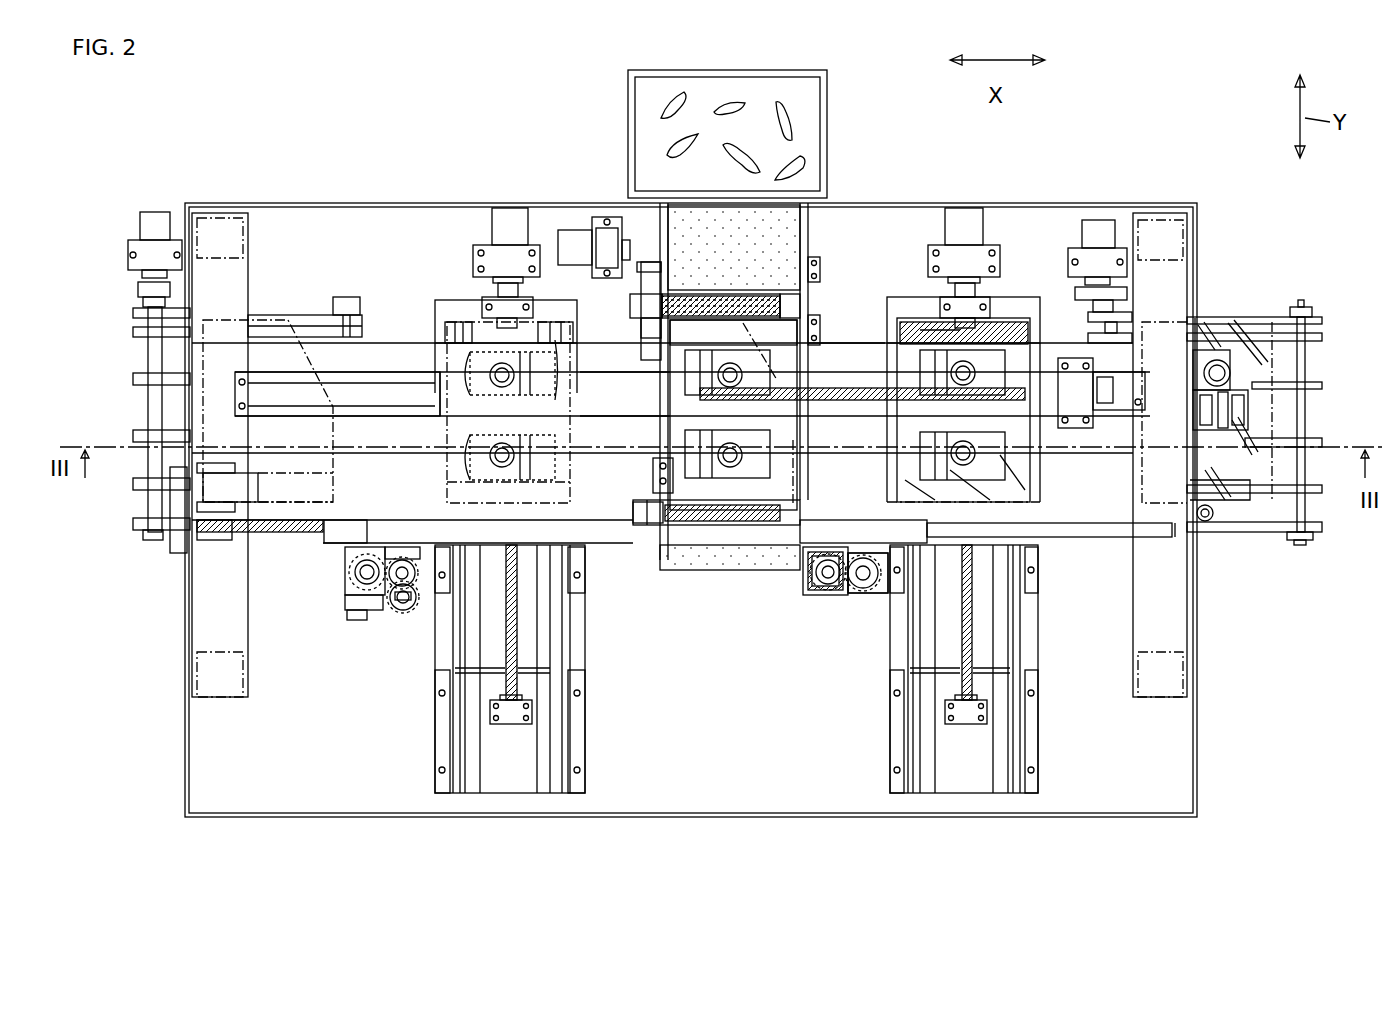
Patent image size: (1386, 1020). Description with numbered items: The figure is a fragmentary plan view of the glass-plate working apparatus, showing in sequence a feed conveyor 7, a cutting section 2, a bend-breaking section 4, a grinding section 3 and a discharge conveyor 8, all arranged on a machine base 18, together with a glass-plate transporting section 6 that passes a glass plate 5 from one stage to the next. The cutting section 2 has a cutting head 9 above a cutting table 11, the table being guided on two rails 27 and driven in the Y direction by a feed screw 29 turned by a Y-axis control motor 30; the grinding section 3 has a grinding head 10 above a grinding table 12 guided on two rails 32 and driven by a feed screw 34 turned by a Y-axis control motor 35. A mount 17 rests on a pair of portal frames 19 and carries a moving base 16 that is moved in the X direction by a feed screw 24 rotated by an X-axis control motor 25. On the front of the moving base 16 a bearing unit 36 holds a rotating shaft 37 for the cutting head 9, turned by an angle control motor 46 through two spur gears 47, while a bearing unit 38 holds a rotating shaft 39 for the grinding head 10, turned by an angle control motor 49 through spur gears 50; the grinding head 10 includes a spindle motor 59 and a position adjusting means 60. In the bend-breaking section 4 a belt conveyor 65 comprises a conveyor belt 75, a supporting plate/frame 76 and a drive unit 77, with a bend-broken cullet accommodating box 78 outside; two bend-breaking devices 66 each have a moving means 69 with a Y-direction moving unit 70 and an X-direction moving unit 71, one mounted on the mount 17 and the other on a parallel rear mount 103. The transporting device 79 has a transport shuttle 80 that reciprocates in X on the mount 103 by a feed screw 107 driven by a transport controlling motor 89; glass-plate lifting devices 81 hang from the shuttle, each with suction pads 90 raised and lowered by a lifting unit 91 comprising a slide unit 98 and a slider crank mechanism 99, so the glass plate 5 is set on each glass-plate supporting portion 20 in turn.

The cutting section 2 is at (967, 802).
The grinding section 3 is at (508, 802).
The bend-breaking section 4 is at (724, 512).
The glass plate 5 is at (1253, 473).
The glass-plate transporting section 6 is at (829, 357).
The feed conveyor 7 is at (1258, 525).
The discharge conveyor 8 is at (185, 432).
The cutting head 9 is at (860, 590).
The grinding head 10 is at (377, 608).
The cutting table 11 is at (1037, 472).
The grinding table 12 is at (555, 470).
The moving base 16 is at (613, 528).
The mount 17 is at (1113, 500).
The machine base 18 is at (730, 768).
The portal frames 19 is at (212, 580).
The glass-plate supporting portion 20 is at (1068, 523).
The feed screw 24 is at (255, 533).
The X-axis control motor 25 is at (228, 490).
The rails 27 is at (915, 705).
The feed screw 29 is at (973, 623).
The Y-axis control motor 30 is at (965, 238).
The rails 32 is at (462, 732).
The feed screw 34 is at (517, 627).
The Y-axis control motor 35 is at (508, 238).
The bearing unit 36 is at (862, 598).
The rotating shaft 37 is at (828, 593).
The bearing unit 38 is at (402, 558).
The rotating shaft 39 is at (390, 550).
The angle control motor 46 is at (807, 577).
The spur gears 47 is at (872, 587).
The angle control motor 49 is at (350, 567).
The spur gears 50 is at (407, 603).
The spindle motor 59 is at (410, 600).
The position adjusting means 60 is at (350, 600).
The belt conveyor 65 is at (828, 215).
The bend-breaking devices 66 is at (660, 292).
The moving means 69 is at (650, 307).
The Y-direction moving unit 70 is at (655, 330).
The X-direction moving unit 71 is at (805, 298).
The conveyor belt 75 is at (760, 245).
The supporting plate/frame 76 is at (811, 257).
The drive unit 77 is at (583, 240).
The bend-broken cullet accommodating box 78 is at (810, 137).
The transporting device 79 is at (857, 387).
The transport shuttle 80 is at (597, 403).
The glass-plate lifting device 81 is at (717, 422).
The transport controlling motor 89 is at (1070, 365).
The suction pads 90 is at (483, 462).
The lifting unit 91 is at (497, 360).
The slide unit 98 is at (1258, 430).
The slider crank mechanism 99 is at (1253, 383).
The mount 103 is at (393, 367).
The feed screw 107 is at (828, 400).